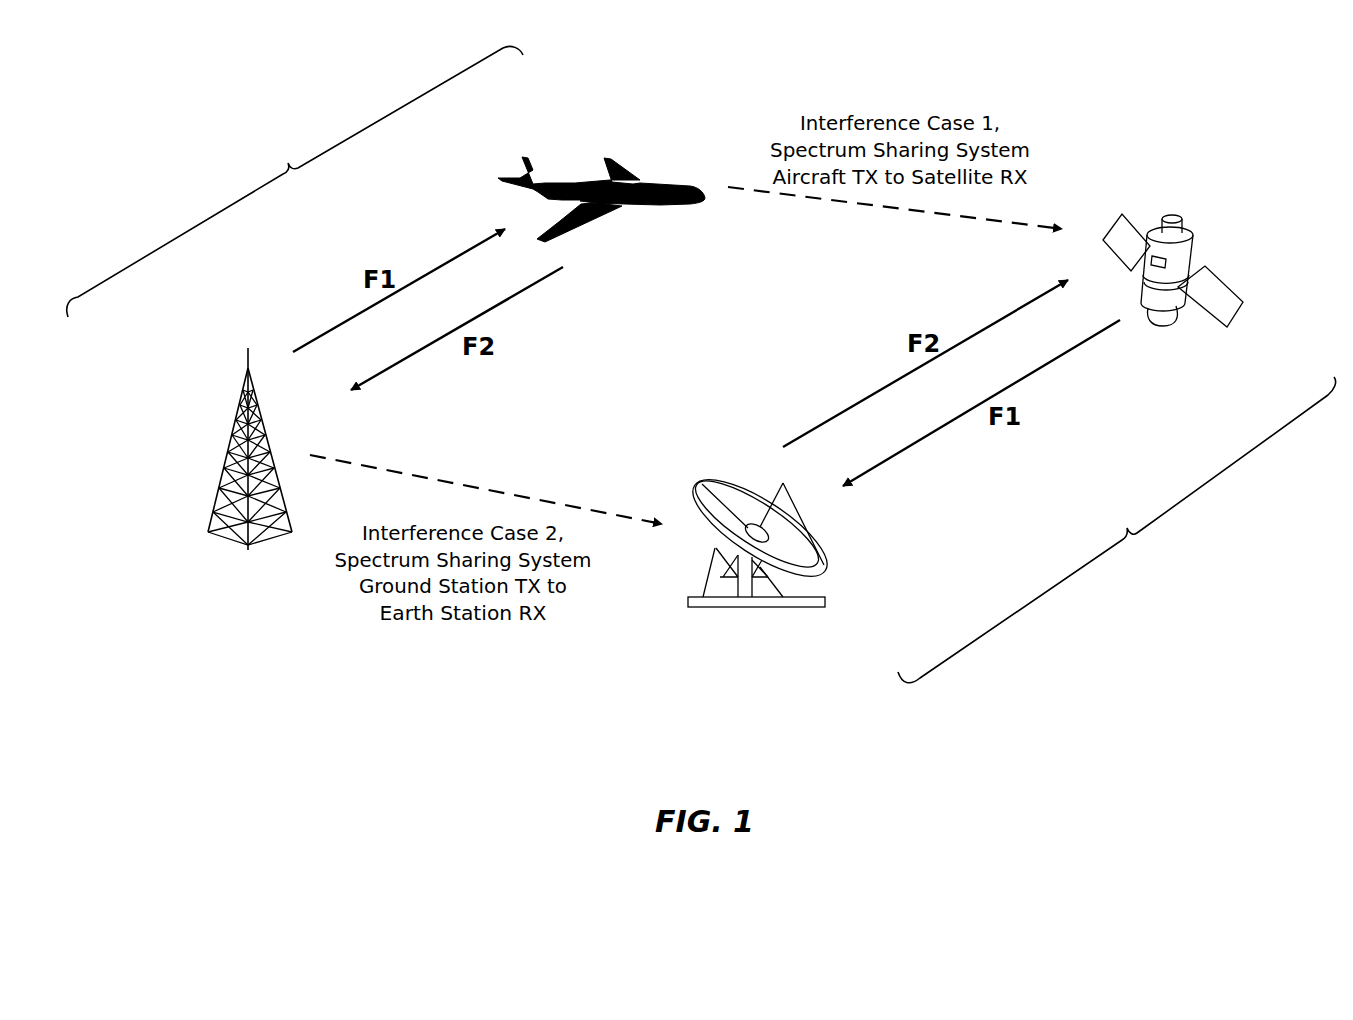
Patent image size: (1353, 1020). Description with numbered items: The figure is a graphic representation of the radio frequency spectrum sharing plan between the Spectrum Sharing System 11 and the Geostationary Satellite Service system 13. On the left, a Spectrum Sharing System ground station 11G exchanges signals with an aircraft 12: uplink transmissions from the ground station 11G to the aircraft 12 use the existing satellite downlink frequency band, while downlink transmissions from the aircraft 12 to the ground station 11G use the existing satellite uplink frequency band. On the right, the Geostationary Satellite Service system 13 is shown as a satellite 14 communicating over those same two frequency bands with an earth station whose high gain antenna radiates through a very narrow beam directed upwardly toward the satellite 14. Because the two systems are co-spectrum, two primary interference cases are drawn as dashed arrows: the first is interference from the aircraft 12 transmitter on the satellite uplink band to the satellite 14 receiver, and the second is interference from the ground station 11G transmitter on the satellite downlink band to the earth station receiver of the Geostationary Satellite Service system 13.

The Spectrum Sharing System 11 is at (295, 181).
The Spectrum Sharing System ground station 11G is at (232, 440).
The aircraft 12 is at (632, 182).
The Geostationary Satellite Service system 13 is at (1117, 530).
The satellite 14 is at (1180, 299).